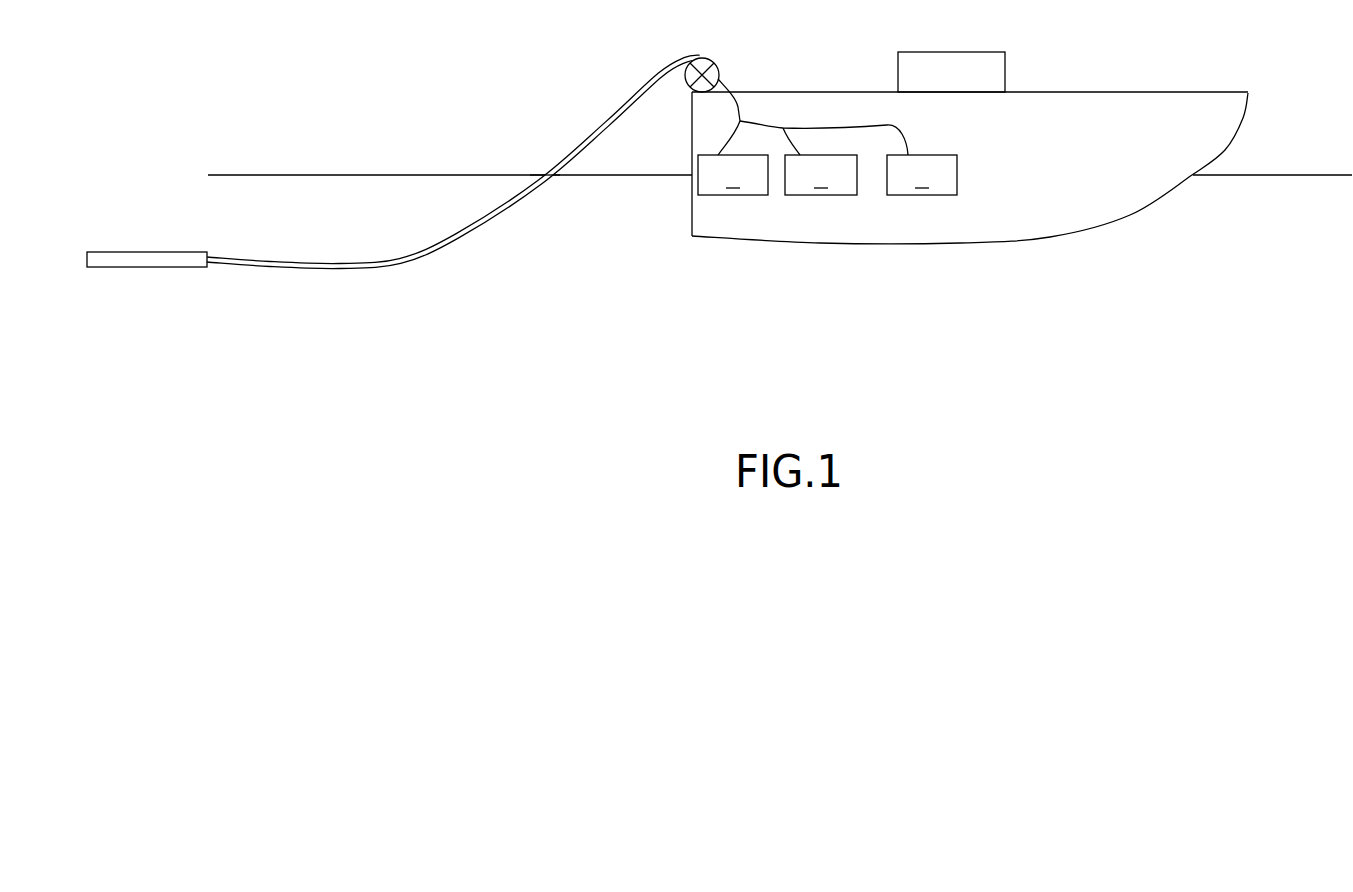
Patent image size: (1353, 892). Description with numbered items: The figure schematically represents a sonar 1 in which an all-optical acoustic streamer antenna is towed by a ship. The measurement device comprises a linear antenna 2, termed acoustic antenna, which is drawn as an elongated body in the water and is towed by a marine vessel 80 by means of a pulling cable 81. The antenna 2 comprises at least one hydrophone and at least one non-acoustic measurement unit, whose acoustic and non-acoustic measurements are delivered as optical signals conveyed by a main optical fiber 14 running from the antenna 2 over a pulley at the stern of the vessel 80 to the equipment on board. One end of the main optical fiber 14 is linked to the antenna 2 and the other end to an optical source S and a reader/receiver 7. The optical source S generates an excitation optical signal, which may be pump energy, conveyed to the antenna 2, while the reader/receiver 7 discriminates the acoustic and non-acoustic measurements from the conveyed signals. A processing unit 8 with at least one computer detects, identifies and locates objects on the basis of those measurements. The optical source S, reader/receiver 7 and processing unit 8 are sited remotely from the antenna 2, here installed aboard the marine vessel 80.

The towing system 1 is at (440, 395).
The linear antenna 2 is at (140, 268).
The main optical fiber 14 is at (457, 233).
The pulling cable 81 is at (402, 265).
The marine vessel 80 is at (960, 243).
The optical source S is at (733, 175).
The reader/receiver 7 is at (821, 175).
The processing unit 8 is at (922, 175).